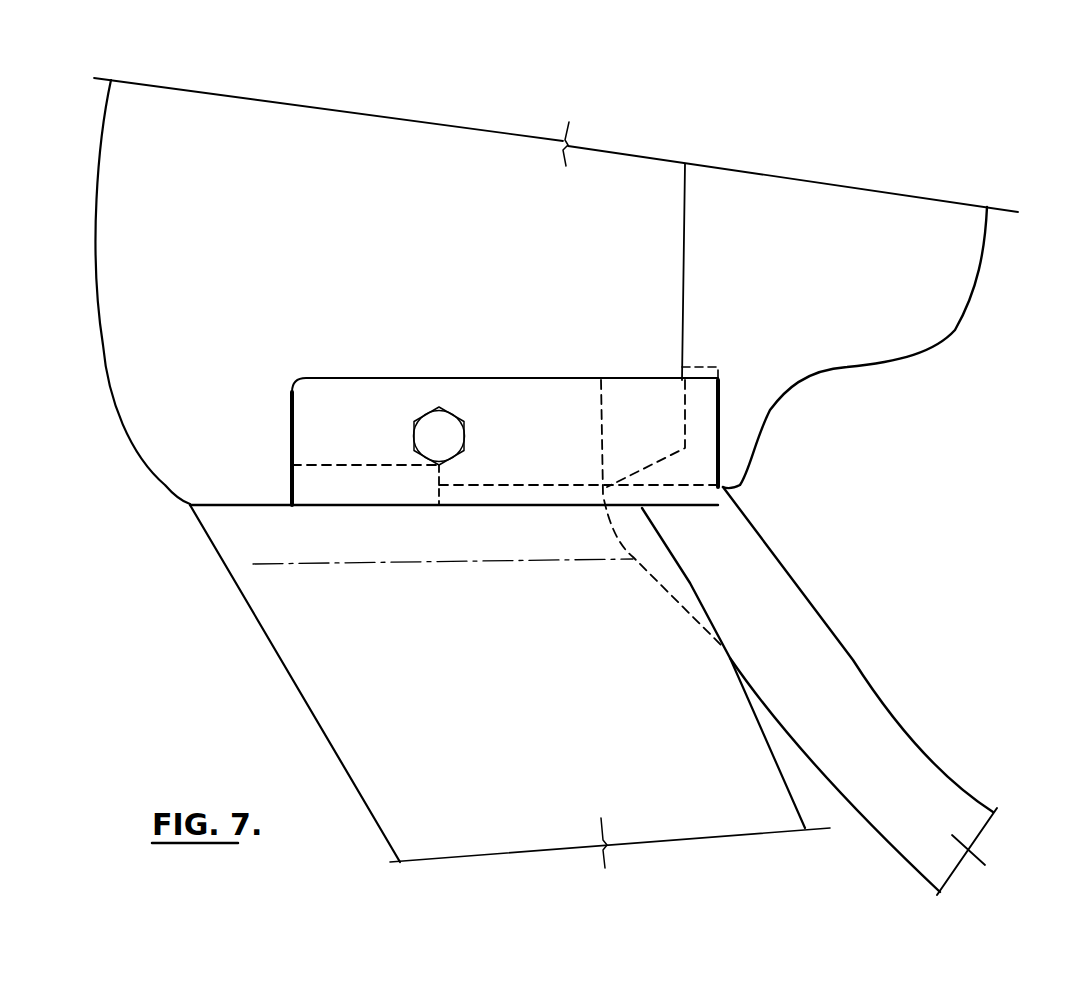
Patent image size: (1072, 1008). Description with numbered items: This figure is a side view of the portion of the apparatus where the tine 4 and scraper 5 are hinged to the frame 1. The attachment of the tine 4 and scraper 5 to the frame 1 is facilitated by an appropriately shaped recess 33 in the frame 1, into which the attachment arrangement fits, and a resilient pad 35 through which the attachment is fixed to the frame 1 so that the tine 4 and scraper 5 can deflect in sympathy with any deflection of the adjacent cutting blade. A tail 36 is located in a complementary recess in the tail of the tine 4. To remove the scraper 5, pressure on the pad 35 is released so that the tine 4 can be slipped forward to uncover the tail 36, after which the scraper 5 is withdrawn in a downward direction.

The frame 1 is at (421, 176).
The recess 33 is at (292, 376).
The resilient pad 35 is at (331, 487).
The tail 36 is at (718, 367).
The tine 4 is at (262, 632).
The scraper 5 is at (822, 610).